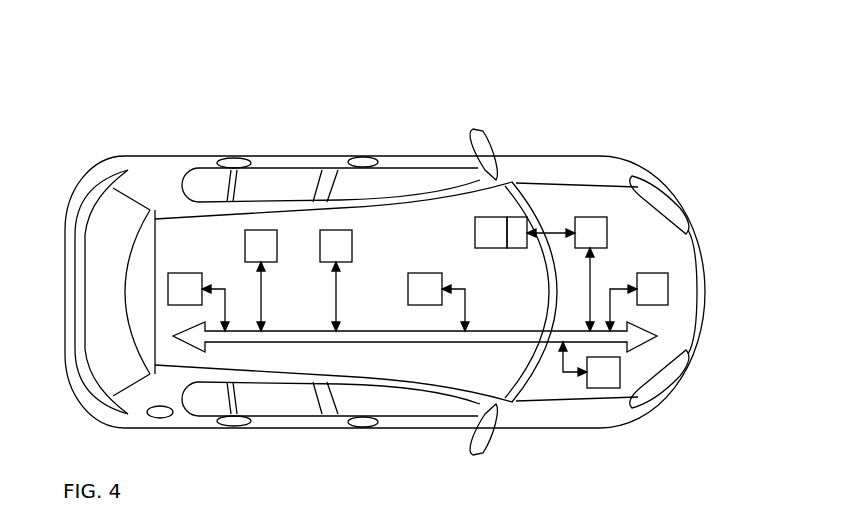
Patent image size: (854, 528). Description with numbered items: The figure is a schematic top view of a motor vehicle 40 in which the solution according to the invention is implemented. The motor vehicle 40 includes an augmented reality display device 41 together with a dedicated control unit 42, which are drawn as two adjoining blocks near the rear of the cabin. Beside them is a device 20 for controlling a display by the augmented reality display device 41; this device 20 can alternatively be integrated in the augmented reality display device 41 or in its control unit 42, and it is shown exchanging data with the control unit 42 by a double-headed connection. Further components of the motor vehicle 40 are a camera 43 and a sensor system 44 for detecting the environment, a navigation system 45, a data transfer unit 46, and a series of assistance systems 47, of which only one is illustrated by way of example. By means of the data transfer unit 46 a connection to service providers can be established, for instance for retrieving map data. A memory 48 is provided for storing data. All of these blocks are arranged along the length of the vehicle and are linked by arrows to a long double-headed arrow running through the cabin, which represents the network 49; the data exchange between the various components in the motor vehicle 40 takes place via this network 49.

The motor vehicle 40 is at (598, 156).
The device for controlling a display 20 is at (607, 235).
The augmented reality display device 41 is at (492, 217).
The control unit 42 is at (518, 217).
The camera 43 is at (420, 273).
The sensor system 44 is at (603, 388).
The navigation system 45 is at (247, 230).
The data transfer unit 46 is at (322, 230).
The assistance system 47 is at (653, 273).
The memory 48 is at (185, 273).
The network 49 is at (282, 342).